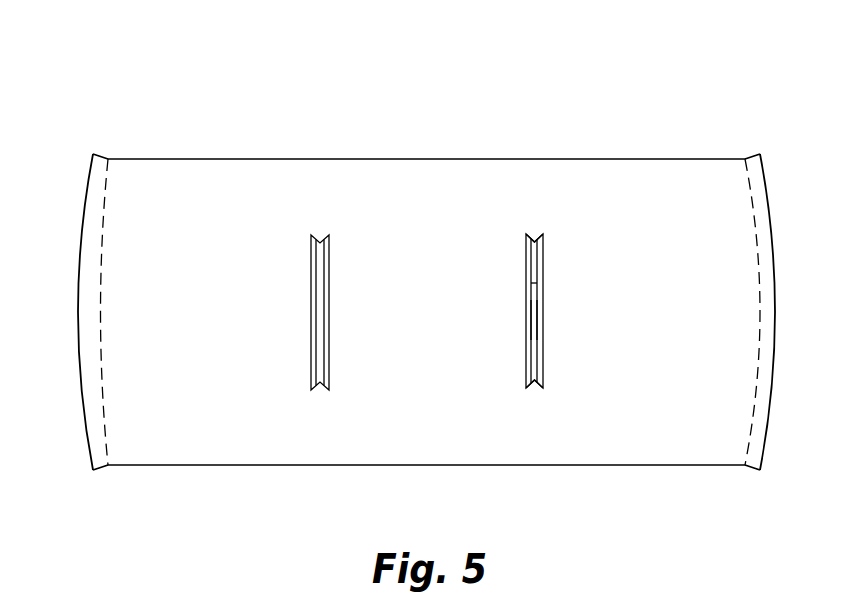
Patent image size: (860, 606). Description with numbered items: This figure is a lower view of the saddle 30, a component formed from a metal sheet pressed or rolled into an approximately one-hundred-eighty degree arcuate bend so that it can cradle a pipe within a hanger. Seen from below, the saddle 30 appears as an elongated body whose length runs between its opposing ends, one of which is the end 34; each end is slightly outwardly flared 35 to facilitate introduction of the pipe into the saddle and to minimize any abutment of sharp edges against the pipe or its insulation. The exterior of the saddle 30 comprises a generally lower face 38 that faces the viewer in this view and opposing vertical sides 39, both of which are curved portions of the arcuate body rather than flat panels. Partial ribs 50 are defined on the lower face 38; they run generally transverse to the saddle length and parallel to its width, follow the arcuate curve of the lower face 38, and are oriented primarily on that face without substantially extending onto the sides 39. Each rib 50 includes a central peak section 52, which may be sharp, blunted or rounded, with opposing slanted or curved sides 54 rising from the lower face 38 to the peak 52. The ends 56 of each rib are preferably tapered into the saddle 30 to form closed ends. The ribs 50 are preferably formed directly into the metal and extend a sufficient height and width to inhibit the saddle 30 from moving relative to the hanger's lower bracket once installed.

The saddle 30 is at (617, 98).
The end 34 is at (79, 336).
The outward flare 35 is at (87, 314).
The lower face 38 is at (244, 308).
The vertical sides 39 is at (444, 142).
The partial ribs 50 is at (323, 296).
The central peak section 52 is at (532, 287).
The slanted or curved sides 54 is at (538, 308).
The rib ends 56 is at (531, 237).